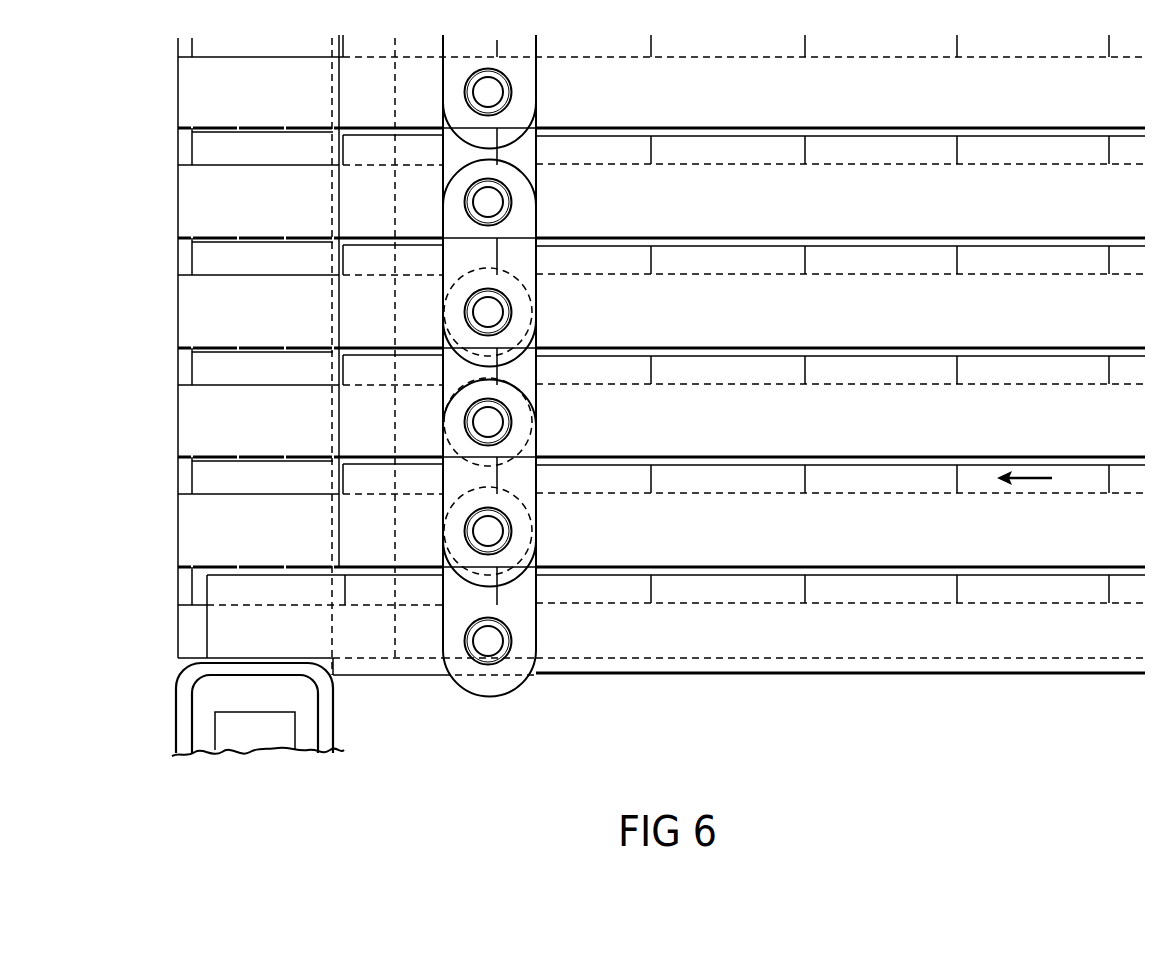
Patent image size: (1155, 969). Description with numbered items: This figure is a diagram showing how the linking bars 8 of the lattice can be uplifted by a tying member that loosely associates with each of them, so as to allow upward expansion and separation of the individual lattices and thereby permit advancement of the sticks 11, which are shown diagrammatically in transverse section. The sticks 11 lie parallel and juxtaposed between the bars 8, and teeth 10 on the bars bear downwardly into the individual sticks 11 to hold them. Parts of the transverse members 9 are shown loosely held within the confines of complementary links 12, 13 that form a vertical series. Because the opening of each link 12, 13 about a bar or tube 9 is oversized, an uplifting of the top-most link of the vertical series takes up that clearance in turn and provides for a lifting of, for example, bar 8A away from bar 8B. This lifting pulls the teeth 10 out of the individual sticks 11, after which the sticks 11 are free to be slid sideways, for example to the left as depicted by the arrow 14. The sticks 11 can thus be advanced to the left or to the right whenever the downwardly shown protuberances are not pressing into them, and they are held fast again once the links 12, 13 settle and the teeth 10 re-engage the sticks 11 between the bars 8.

The bar 8 is at (357, 401).
The bar 8A is at (840, 391).
The bar 8B is at (840, 502).
The transverse member 9 is at (495, 423).
The teeth 10 is at (287, 344).
The sticks 11 is at (250, 362).
The link 12 is at (537, 612).
The link 13 is at (537, 475).
The arrow 14 is at (1030, 481).